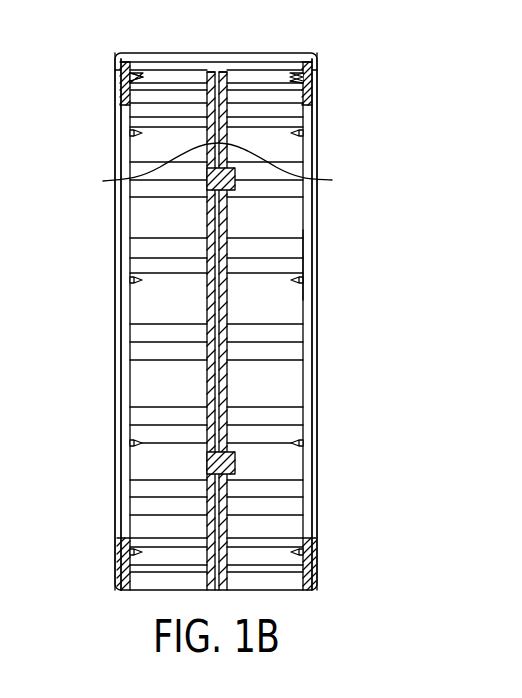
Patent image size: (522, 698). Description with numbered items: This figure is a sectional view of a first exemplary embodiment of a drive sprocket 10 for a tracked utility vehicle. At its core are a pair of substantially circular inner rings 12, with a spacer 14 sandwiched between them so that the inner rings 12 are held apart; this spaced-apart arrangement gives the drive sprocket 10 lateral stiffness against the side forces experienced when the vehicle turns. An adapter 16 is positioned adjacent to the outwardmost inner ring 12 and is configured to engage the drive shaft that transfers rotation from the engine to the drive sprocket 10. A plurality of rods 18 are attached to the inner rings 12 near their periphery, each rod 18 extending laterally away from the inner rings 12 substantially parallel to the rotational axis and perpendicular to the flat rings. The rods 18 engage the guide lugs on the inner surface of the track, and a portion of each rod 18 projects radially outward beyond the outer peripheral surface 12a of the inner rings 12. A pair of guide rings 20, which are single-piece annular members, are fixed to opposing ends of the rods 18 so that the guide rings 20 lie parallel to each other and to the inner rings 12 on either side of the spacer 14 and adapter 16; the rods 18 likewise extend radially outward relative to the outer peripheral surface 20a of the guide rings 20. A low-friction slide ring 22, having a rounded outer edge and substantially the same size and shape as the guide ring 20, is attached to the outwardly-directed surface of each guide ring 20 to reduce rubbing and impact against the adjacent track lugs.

The drive sprocket 10 is at (381, 81).
The inner rings 12 is at (217, 169).
The outer peripheral surface of the inner rings 12a is at (223, 72).
The spacer 14 is at (217, 376).
The adapter 16 is at (232, 376).
The rods 18 is at (294, 268).
The guide rings 20 is at (131, 227).
The outer peripheral surface of the guide rings 20a is at (127, 309).
The slide ring 22 is at (116, 383).